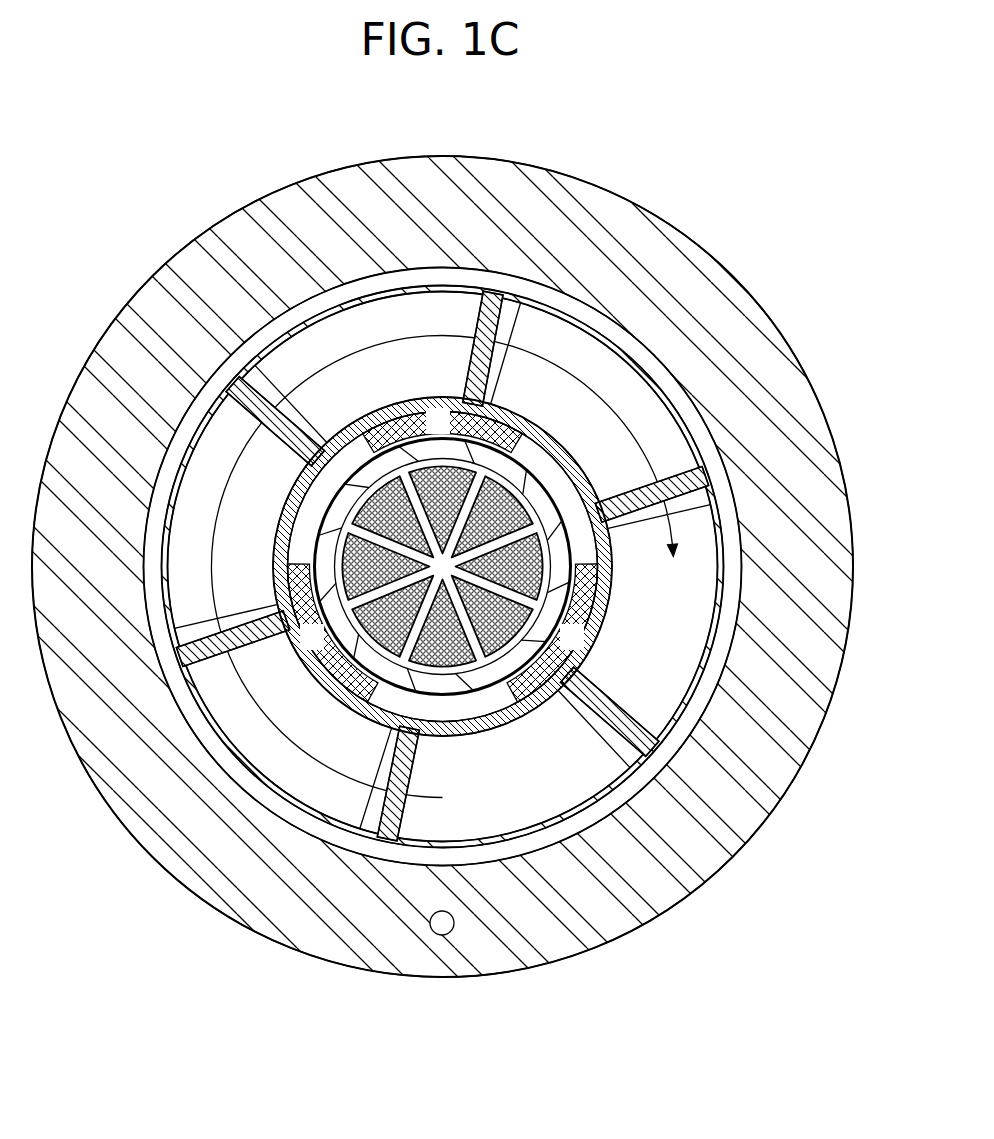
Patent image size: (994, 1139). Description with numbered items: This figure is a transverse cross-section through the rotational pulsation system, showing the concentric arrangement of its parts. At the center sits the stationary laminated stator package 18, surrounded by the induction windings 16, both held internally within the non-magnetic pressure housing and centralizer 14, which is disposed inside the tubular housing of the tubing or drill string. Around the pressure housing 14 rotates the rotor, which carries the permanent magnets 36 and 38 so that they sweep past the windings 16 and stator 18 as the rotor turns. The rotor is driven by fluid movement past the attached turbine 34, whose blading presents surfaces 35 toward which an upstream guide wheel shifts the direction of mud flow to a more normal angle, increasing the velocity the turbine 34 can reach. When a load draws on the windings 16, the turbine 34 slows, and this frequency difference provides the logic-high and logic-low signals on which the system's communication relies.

The non-magnetic pressure housing and centralizer 14 is at (728, 522).
The induction windings 16 is at (546, 510).
The laminated stator package 18 is at (398, 465).
The turbine 34 is at (593, 640).
The surfaces of the turbine blading 35 is at (593, 777).
The permanent magnet 36 is at (592, 515).
The permanent magnet 38 is at (500, 411).